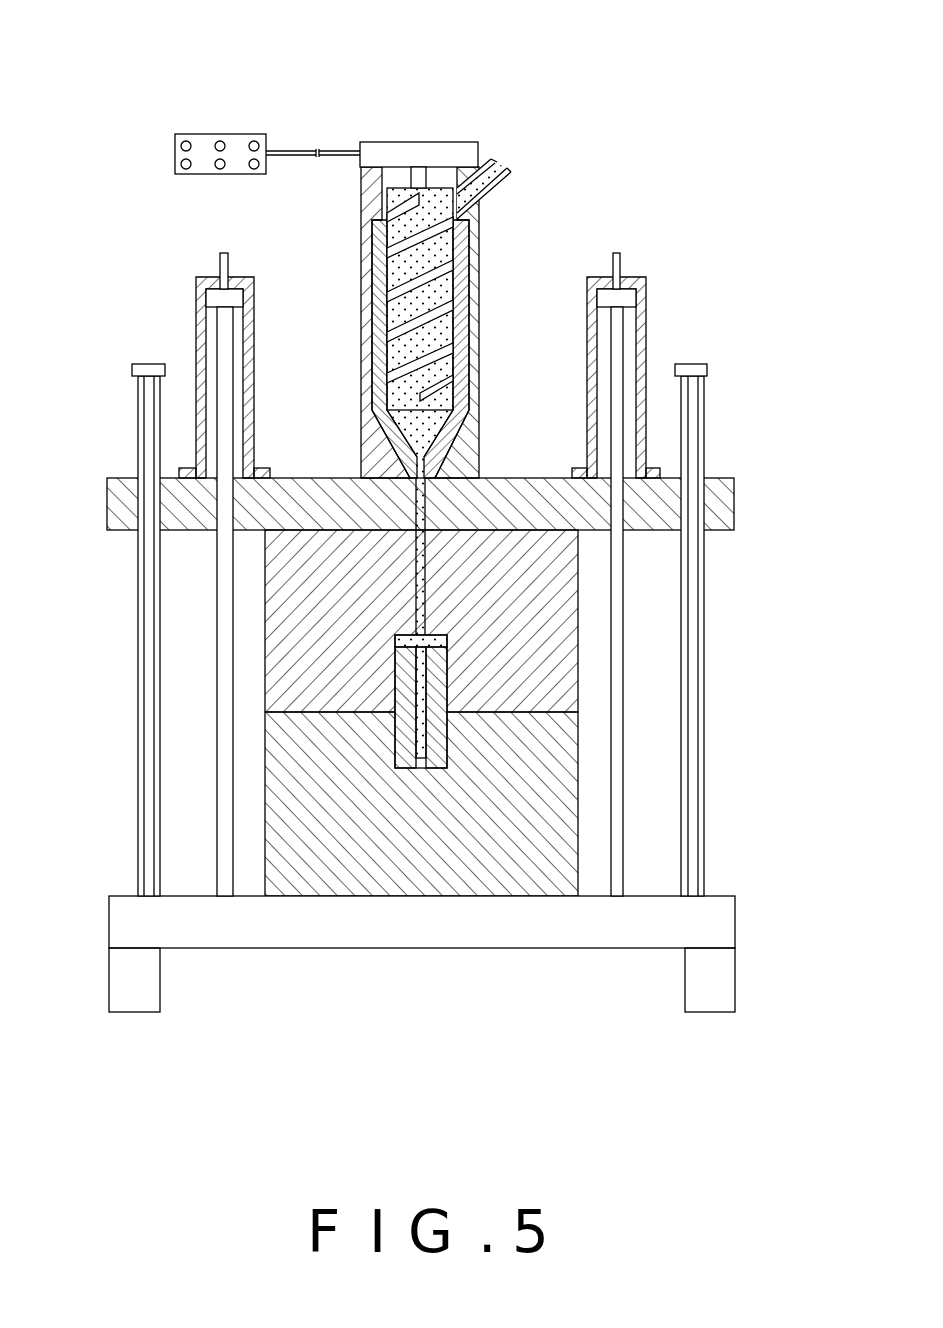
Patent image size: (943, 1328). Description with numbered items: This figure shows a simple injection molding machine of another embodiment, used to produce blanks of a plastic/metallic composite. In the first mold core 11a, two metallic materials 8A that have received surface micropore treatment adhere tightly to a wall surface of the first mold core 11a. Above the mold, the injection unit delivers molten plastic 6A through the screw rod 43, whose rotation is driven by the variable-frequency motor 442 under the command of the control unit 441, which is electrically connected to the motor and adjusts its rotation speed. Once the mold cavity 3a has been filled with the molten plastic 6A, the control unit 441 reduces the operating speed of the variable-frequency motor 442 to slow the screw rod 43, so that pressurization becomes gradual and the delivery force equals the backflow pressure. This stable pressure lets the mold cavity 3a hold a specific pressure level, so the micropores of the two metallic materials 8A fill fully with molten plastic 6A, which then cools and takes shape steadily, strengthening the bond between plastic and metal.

The control unit 441 is at (208, 132).
The variable-frequency motor 442 is at (417, 140).
The screw rod 43 is at (443, 187).
The molten plastic 6A is at (425, 670).
The mold cavity 3a is at (415, 819).
The metallic materials 8A is at (404, 768).
The first mold core 11a is at (580, 825).